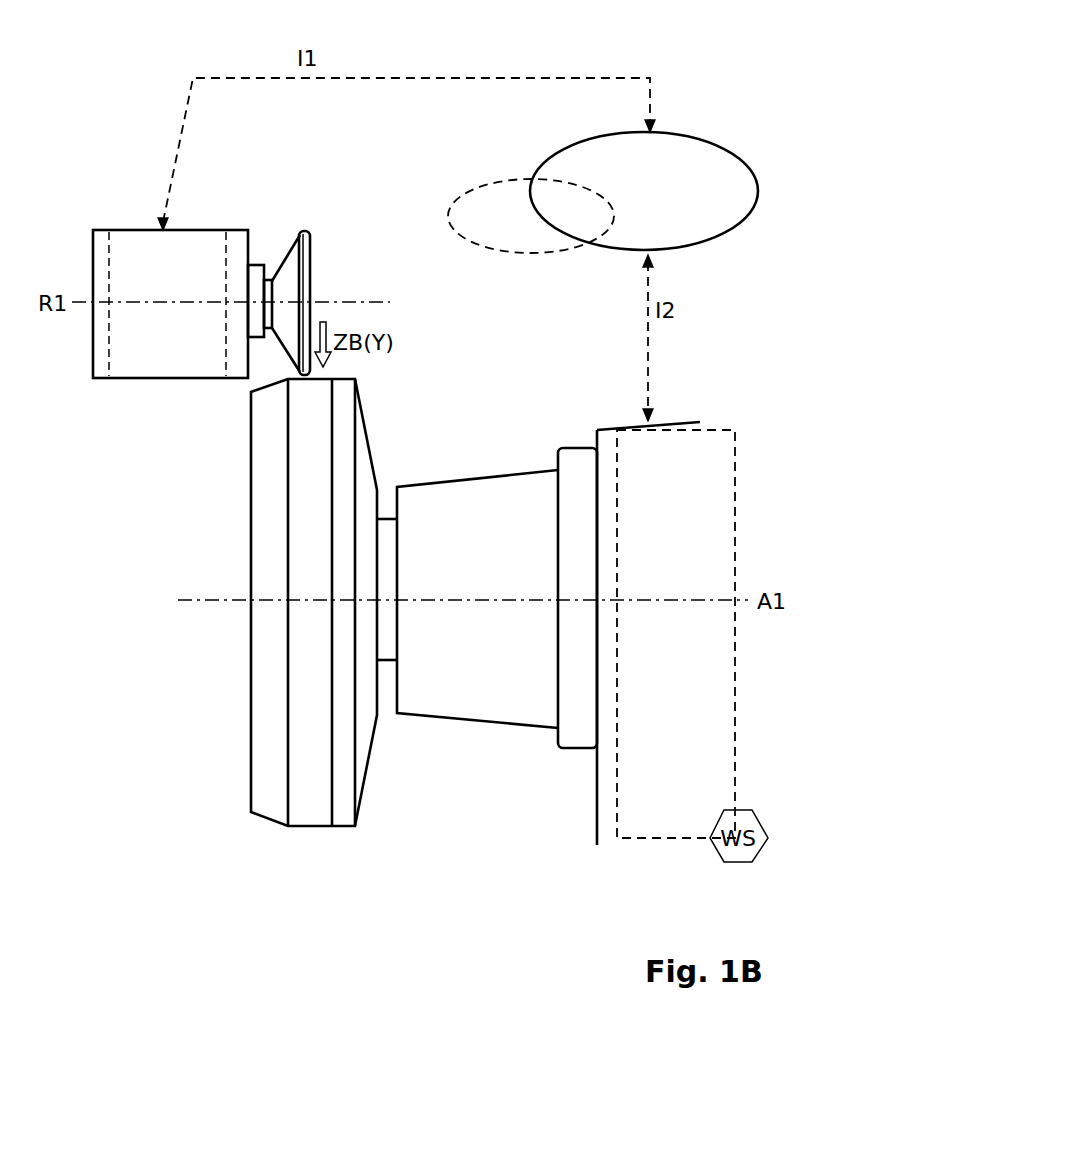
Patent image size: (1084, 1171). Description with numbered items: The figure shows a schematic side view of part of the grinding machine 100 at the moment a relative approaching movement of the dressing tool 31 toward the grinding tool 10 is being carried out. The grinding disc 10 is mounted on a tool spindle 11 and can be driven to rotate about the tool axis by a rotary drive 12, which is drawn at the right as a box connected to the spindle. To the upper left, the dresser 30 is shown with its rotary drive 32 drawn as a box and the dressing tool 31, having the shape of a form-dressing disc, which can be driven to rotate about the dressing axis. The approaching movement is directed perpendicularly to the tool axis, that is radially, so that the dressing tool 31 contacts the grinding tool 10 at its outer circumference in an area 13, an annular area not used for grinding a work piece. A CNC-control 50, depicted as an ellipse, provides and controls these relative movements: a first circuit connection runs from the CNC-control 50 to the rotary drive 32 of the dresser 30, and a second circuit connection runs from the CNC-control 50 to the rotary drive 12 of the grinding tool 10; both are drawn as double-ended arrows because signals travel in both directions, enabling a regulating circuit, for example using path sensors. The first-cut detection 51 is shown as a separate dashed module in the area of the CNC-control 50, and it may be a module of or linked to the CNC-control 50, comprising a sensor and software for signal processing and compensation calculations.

The grinding machine 100 is at (768, 26).
The grinding disc 10 is at (394, 378).
The tool spindle 11 is at (465, 487).
The rotary drive 12 is at (715, 481).
The area 13 is at (305, 788).
The dresser 30 is at (244, 186).
The dressing tool 31 is at (304, 236).
The rotary drive 32 is at (204, 282).
The CNC-control 50 is at (658, 201).
The first-cut detection 51 is at (518, 222).